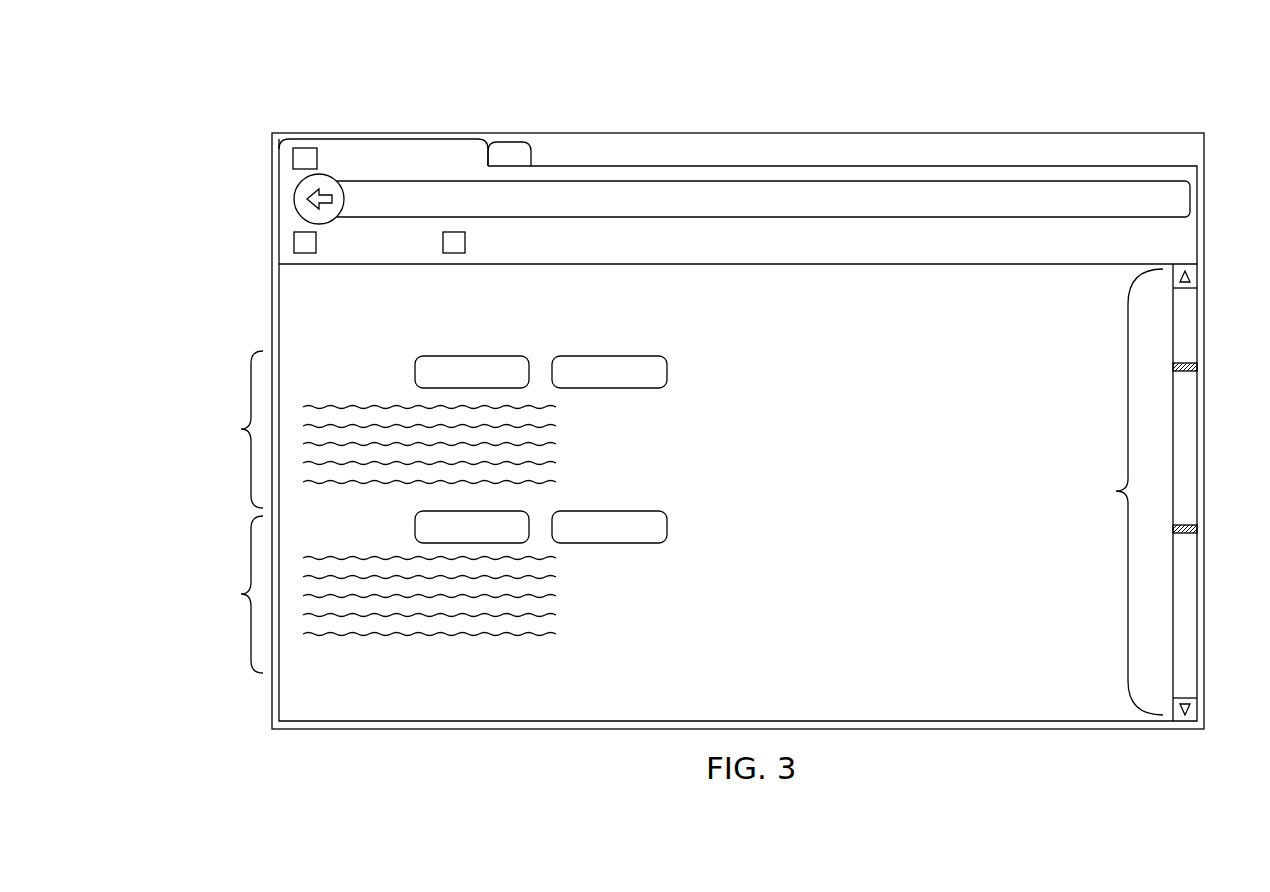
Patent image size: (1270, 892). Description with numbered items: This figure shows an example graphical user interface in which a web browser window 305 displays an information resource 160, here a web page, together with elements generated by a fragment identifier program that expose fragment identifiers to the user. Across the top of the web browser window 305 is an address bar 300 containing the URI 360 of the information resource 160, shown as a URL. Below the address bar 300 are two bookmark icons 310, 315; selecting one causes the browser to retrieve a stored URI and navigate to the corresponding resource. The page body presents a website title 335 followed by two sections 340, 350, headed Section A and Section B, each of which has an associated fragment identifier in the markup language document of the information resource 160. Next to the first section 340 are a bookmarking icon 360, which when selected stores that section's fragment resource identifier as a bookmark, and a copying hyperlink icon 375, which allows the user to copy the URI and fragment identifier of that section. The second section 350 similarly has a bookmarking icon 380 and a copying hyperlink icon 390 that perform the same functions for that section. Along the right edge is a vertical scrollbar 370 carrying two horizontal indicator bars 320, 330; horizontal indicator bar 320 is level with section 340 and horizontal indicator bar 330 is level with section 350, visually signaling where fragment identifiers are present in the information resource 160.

The information resource 160 is at (1067, 287).
The address bar 300 is at (707, 198).
The web browser window 305 is at (389, 131).
The bookmark icon 310 is at (293, 239).
The bookmark icon 315 is at (562, 243).
The horizontal indicator bar 320 is at (1184, 362).
The horizontal indicator bar 330 is at (1184, 524).
The website title 335 is at (300, 296).
The section 340 is at (240, 428).
The section 350 is at (240, 593).
The URI / bookmarking icon 360 is at (530, 203).
The scrollbar 370 is at (1101, 490).
The copying hyperlink icon 375 is at (627, 353).
The bookmarking icon 380 is at (534, 505).
The copying hyperlink icon 390 is at (638, 510).